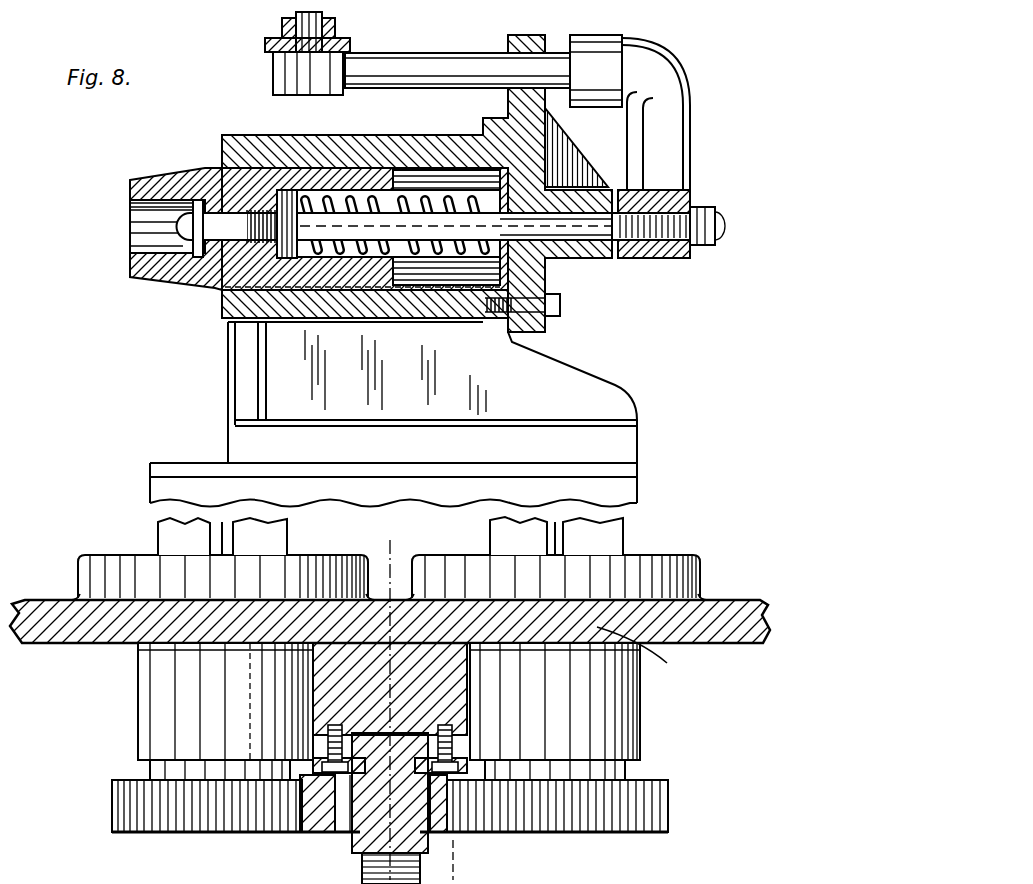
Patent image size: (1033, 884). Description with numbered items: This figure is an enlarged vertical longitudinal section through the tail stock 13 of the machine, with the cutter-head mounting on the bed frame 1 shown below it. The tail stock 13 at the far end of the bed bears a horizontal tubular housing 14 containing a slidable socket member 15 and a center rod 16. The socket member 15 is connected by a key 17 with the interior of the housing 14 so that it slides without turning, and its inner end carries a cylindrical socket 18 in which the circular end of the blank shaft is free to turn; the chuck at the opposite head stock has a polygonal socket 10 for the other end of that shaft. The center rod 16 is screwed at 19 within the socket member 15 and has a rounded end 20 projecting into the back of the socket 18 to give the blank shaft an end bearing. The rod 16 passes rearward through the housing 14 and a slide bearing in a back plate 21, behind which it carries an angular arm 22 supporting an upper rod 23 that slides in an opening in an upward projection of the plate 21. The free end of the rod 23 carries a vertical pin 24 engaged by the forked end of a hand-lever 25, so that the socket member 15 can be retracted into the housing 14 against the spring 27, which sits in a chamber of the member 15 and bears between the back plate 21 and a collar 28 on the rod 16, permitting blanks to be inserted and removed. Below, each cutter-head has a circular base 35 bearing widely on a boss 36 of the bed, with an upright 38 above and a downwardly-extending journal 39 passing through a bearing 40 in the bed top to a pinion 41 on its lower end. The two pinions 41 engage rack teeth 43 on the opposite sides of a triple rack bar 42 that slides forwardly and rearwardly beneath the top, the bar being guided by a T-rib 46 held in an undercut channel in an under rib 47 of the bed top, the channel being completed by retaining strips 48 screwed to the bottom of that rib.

The bed frame 1 is at (628, 487).
The polygonal socket 10 is at (414, 696).
The tail stock 13 is at (227, 387).
The horizontal tubular housing 14 is at (237, 133).
The slidable socket member 15 is at (188, 287).
The center rod 16 is at (227, 217).
The key 17 is at (218, 292).
The cylindrical socket 18 is at (135, 233).
The screw connection 19 is at (262, 207).
The rounded end 20 is at (180, 223).
The back plate 21 is at (555, 263).
The angular arm 22 is at (680, 142).
The upper rod 23 is at (425, 62).
The vertical pin 24 is at (318, 24).
The hand-lever 25 is at (285, 40).
The spring 27 is at (413, 256).
The collar 28 is at (287, 260).
The circular base 35 is at (323, 562).
The boss 36 is at (77, 595).
The upright 38 is at (157, 527).
The journal 39 is at (180, 690).
The bearing 40 is at (140, 733).
The pinion 41 is at (187, 827).
The triple rack bar 42 is at (378, 813).
The rack teeth 43 is at (338, 775).
The T-rib 46 is at (406, 868).
The under rib 47 is at (438, 700).
The retaining strips 48 is at (315, 768).